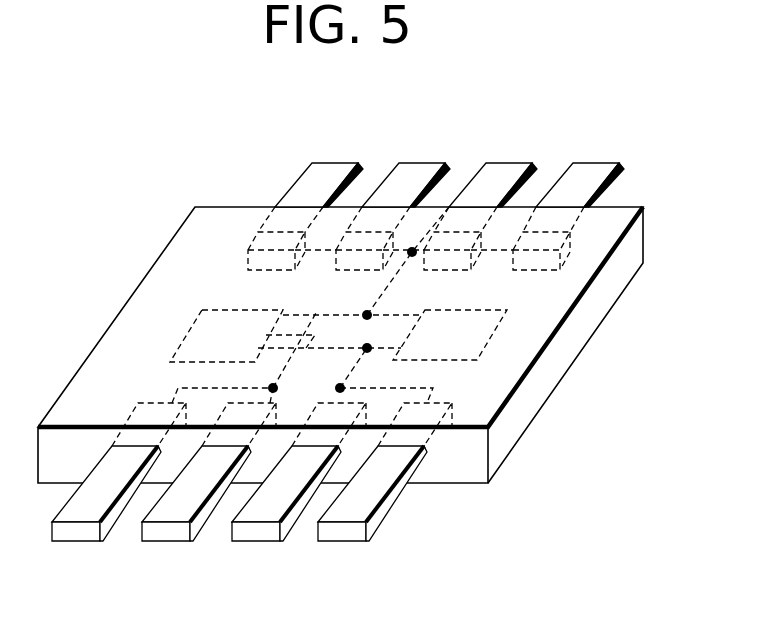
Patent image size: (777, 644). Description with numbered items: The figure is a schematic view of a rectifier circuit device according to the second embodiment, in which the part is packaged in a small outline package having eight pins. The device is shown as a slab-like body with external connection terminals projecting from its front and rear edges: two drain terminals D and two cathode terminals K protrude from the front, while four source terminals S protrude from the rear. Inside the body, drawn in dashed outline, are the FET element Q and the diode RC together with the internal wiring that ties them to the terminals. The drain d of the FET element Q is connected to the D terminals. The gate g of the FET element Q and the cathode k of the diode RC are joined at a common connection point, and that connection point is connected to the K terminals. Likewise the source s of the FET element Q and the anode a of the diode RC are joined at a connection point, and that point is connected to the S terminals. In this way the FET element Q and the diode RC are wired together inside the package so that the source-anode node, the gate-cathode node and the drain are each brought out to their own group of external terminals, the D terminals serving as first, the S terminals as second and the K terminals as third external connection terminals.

The source terminals S is at (637, 157).
The drain terminals D is at (190, 547).
The cathode terminals K is at (363, 546).
The FET element Q is at (185, 333).
The diode RC is at (492, 336).
The source s is at (352, 301).
The anode a is at (386, 304).
The drain d is at (325, 337).
The gate g is at (244, 358).
The cathode k is at (384, 375).